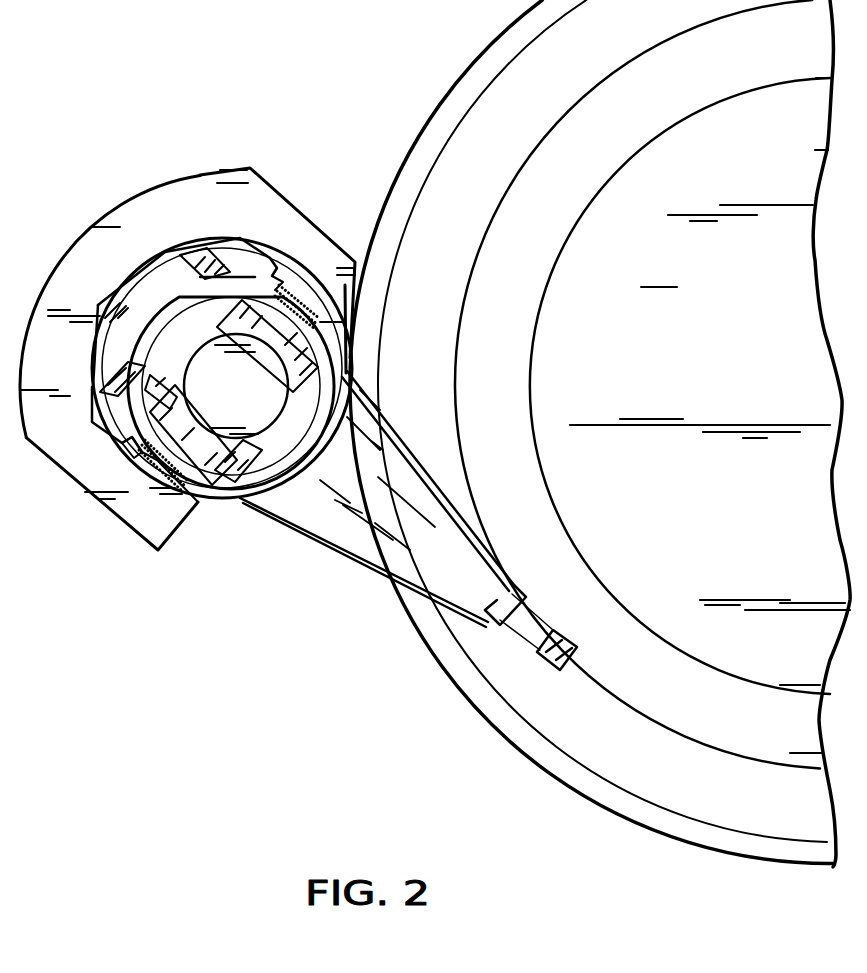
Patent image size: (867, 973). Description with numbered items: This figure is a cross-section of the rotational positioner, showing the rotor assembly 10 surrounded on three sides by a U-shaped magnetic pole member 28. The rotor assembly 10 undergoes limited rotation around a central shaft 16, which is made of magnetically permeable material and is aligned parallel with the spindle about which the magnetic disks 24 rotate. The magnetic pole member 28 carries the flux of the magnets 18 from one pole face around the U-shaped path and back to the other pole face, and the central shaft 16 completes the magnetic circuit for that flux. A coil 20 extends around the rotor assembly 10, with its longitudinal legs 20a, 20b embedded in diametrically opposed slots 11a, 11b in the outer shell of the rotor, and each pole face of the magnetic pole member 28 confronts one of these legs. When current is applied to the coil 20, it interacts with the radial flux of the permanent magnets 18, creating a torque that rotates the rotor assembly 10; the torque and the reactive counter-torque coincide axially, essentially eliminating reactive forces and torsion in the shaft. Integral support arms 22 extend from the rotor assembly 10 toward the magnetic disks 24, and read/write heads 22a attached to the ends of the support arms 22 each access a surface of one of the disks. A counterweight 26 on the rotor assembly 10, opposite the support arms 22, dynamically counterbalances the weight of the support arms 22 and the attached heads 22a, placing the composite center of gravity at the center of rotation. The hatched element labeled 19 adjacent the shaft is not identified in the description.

The rotor assembly 10 is at (222, 313).
The slot 11a is at (112, 460).
The slot 11b is at (295, 266).
The central shaft 16 is at (236, 386).
The magnet 18 is at (237, 308).
The magnet block 19 is at (257, 455).
The coil 20 is at (213, 402).
The longitudinal leg 20a is at (124, 497).
The longitudinal leg 20b is at (320, 261).
The support arm 22 is at (477, 510).
The read/write head 22a is at (557, 679).
The magnetic disk 24 is at (600, 433).
The counterweight 26 is at (187, 260).
The magnetic pole member 28 is at (120, 529).